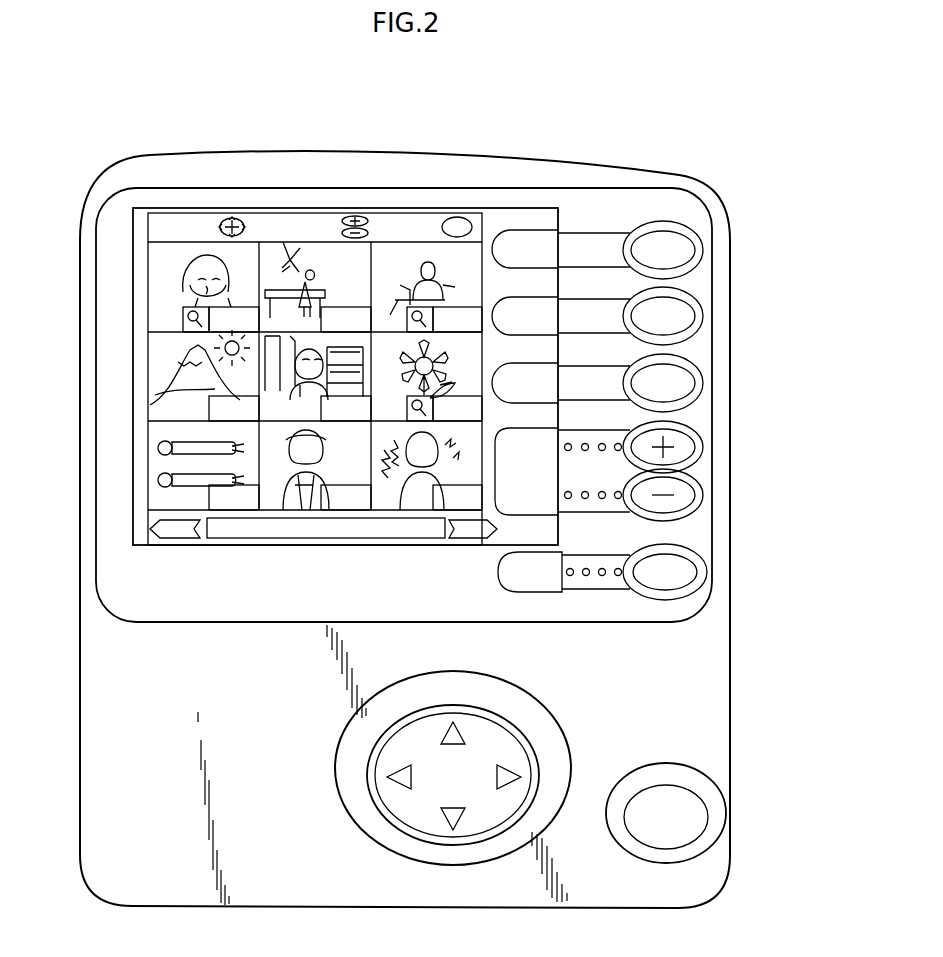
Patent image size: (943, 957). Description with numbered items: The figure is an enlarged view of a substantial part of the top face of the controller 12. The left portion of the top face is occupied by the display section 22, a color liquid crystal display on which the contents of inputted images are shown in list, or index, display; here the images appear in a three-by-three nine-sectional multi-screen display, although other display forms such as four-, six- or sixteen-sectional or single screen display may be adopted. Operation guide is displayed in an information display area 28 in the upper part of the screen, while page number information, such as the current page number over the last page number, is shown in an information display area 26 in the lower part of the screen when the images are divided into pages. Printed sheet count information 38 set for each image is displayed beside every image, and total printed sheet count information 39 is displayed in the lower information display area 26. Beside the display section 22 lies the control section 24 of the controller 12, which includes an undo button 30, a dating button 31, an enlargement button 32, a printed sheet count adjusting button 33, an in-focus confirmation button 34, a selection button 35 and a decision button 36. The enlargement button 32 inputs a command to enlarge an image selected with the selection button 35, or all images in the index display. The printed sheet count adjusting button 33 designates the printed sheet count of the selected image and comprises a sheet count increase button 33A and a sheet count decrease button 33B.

The controller 12 is at (729, 248).
The display section 22 is at (295, 347).
The control section 24 is at (586, 206).
The information display area 26 is at (148, 530).
The information display area 28 is at (221, 212).
The undo button 30 is at (666, 240).
The dating button 31 is at (677, 316).
The enlargement button 32 is at (678, 383).
The printed sheet count adjusting button 33 is at (674, 471).
The sheet count increase button 33A is at (680, 447).
The sheet count decrease button 33B is at (680, 495).
The in-focus confirmation button 34 is at (680, 572).
The selection button 35 is at (528, 741).
The decision button 36 is at (706, 812).
The printed sheet count information 38 is at (208, 332).
The total printed sheet count information 39 is at (287, 531).